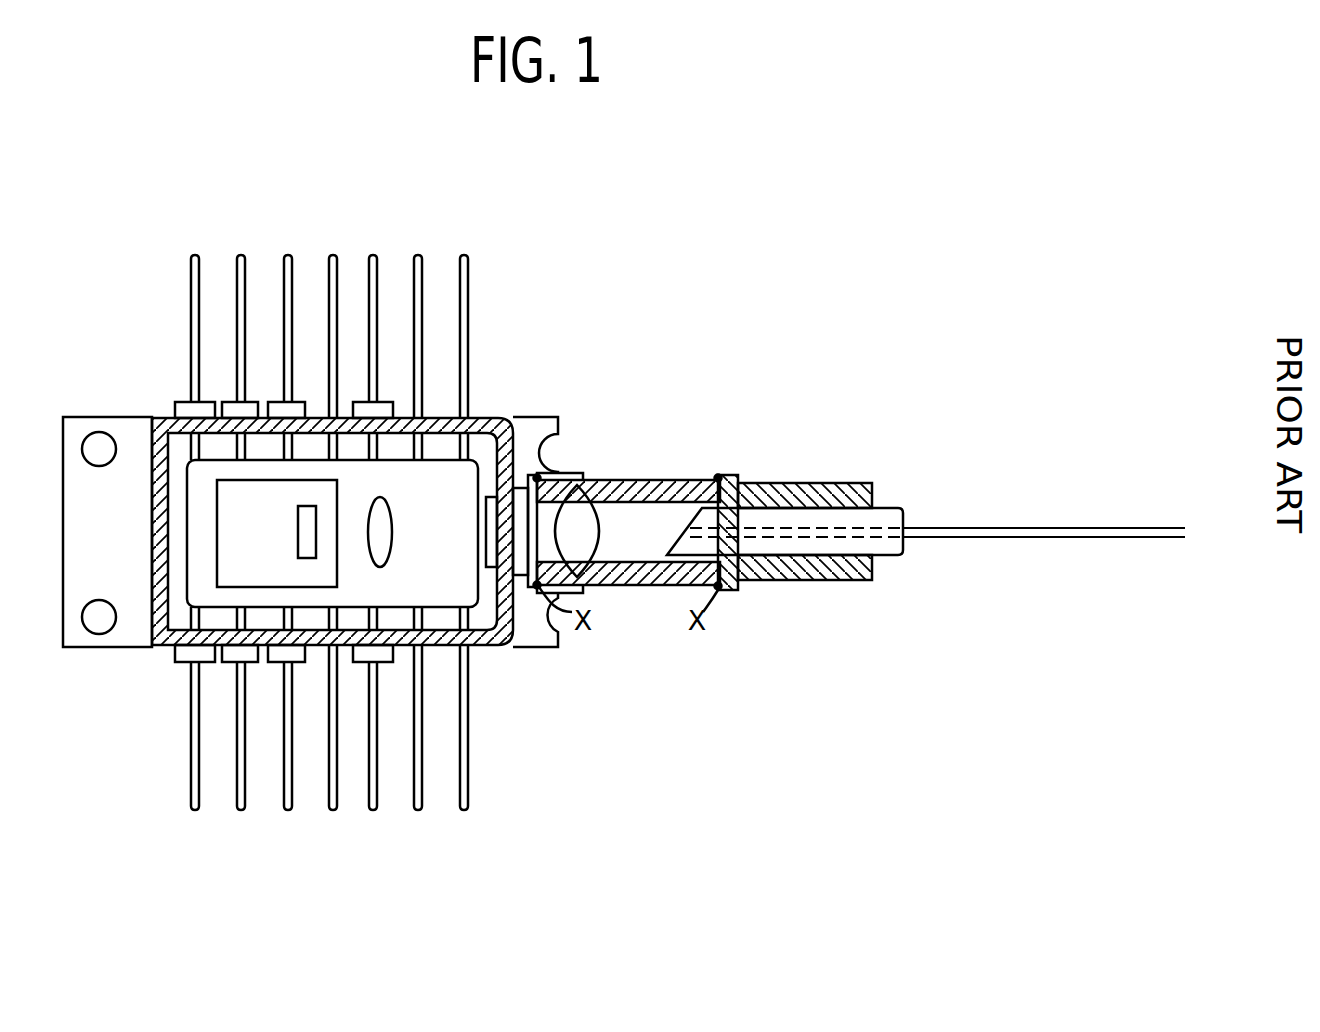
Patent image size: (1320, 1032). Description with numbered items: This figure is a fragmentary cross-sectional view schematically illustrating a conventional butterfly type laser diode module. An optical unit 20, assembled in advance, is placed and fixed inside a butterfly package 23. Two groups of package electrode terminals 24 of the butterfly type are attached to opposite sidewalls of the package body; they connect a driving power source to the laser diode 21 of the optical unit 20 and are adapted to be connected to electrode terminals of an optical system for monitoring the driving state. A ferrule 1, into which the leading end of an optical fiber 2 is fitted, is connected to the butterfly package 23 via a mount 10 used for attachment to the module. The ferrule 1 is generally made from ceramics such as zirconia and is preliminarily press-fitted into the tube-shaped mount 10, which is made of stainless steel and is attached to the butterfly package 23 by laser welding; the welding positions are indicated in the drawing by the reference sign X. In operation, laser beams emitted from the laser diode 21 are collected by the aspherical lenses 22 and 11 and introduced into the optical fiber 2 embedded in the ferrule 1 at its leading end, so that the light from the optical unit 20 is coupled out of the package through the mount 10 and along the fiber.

The ferrule 1 is at (892, 547).
The optical fiber 2 is at (1000, 528).
The mount 10 is at (748, 478).
The aspherical lens 11 is at (578, 502).
The optical unit 20 is at (476, 457).
The laser diode 21 is at (298, 546).
The aspherical lens 22 is at (392, 541).
The butterfly package 23 is at (495, 648).
The package electrode terminals 24 is at (187, 198).